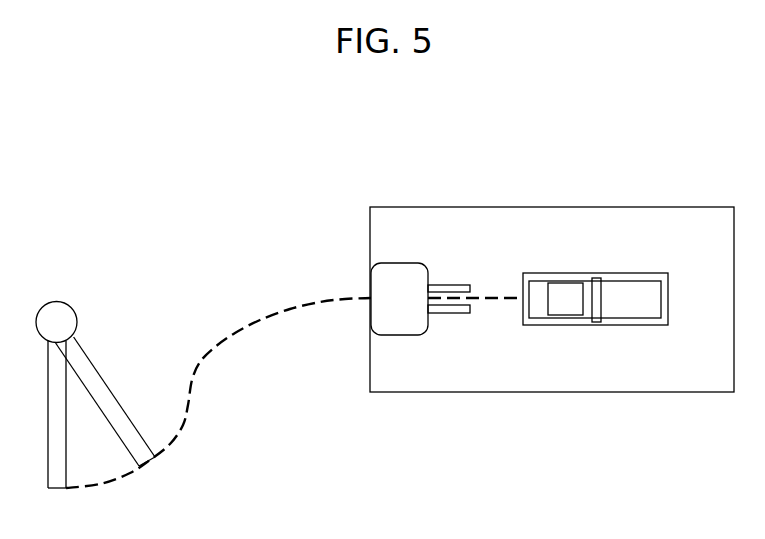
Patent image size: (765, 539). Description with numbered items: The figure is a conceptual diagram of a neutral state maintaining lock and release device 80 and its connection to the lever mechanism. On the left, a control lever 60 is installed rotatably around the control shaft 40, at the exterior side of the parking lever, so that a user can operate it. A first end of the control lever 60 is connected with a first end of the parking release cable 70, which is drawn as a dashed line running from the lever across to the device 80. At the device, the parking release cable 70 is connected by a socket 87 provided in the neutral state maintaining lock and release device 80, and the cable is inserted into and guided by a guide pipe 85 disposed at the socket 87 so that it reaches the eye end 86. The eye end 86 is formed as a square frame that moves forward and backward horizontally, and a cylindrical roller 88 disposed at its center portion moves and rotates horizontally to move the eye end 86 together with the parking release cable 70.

The control shaft 40 is at (55, 309).
The control lever 60 is at (92, 368).
The parking release cable 70 is at (243, 328).
The neutral state maintaining lock and release device 80 is at (512, 206).
The guide pipe 85 is at (446, 286).
The eye end 86 is at (570, 278).
The socket 87 is at (400, 272).
The roller 88 is at (597, 294).